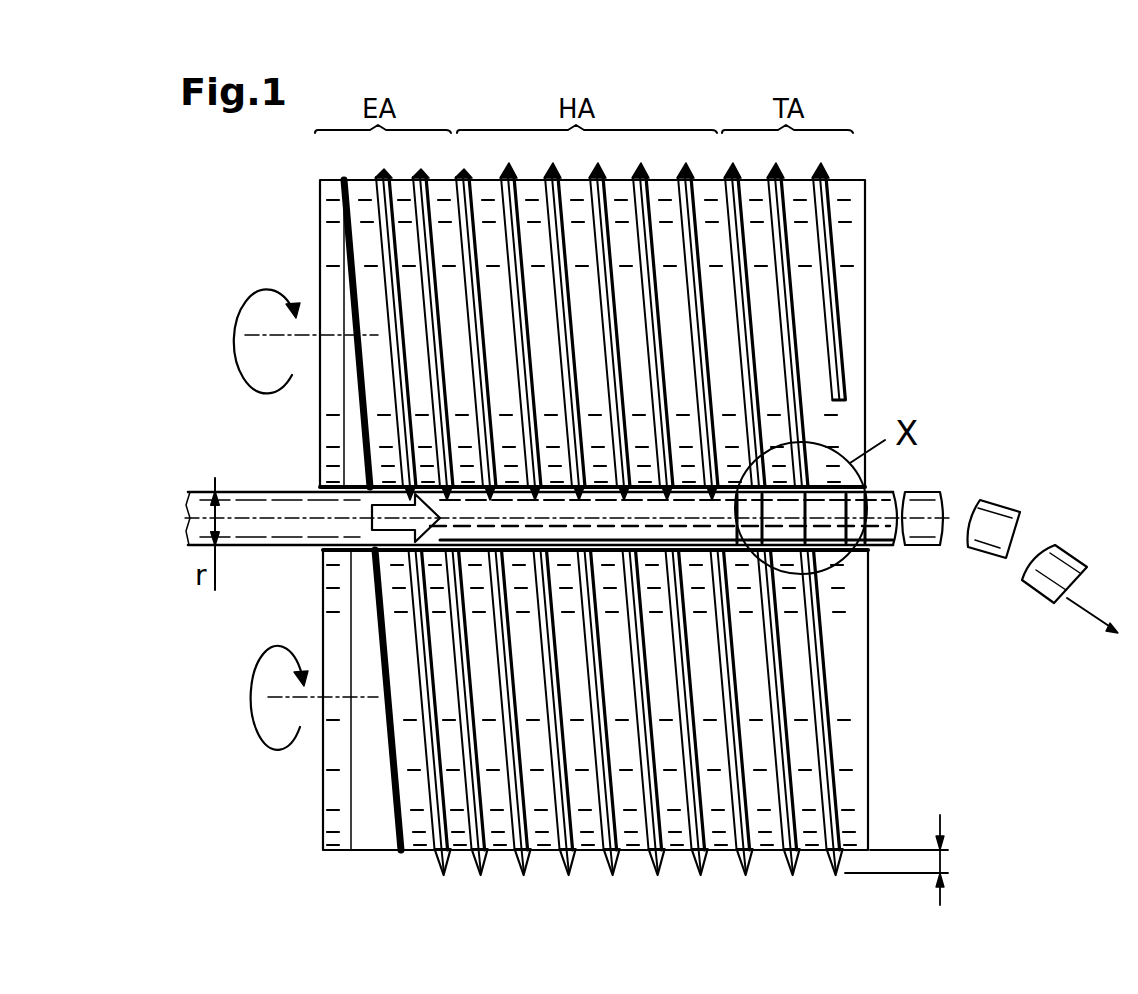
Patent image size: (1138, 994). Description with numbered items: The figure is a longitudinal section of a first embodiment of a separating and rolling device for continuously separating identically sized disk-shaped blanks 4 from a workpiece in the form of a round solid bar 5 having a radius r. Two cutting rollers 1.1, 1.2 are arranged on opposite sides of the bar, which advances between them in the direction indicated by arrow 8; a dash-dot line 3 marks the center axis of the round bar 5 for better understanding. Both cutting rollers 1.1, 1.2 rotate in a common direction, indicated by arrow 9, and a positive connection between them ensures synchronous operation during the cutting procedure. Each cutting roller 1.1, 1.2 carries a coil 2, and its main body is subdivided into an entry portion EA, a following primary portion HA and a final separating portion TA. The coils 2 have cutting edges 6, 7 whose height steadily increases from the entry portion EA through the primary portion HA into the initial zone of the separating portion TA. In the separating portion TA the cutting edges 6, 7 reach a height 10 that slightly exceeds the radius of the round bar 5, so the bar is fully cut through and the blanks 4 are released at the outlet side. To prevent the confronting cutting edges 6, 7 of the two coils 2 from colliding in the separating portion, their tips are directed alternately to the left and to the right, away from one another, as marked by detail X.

The cutting roller 1.1 is at (336, 278).
The cutting roller 1.2 is at (338, 764).
The coil 2 is at (700, 367).
The dash-dot line 3 is at (248, 517).
The disk-shaped blanks 4 is at (1047, 600).
The round solid bar 5 is at (298, 496).
The cutting edge 6 is at (832, 872).
The cutting edge 7 is at (830, 178).
The arrow 8 is at (356, 546).
The arrow 9 is at (247, 314).
The height 10 is at (942, 863).